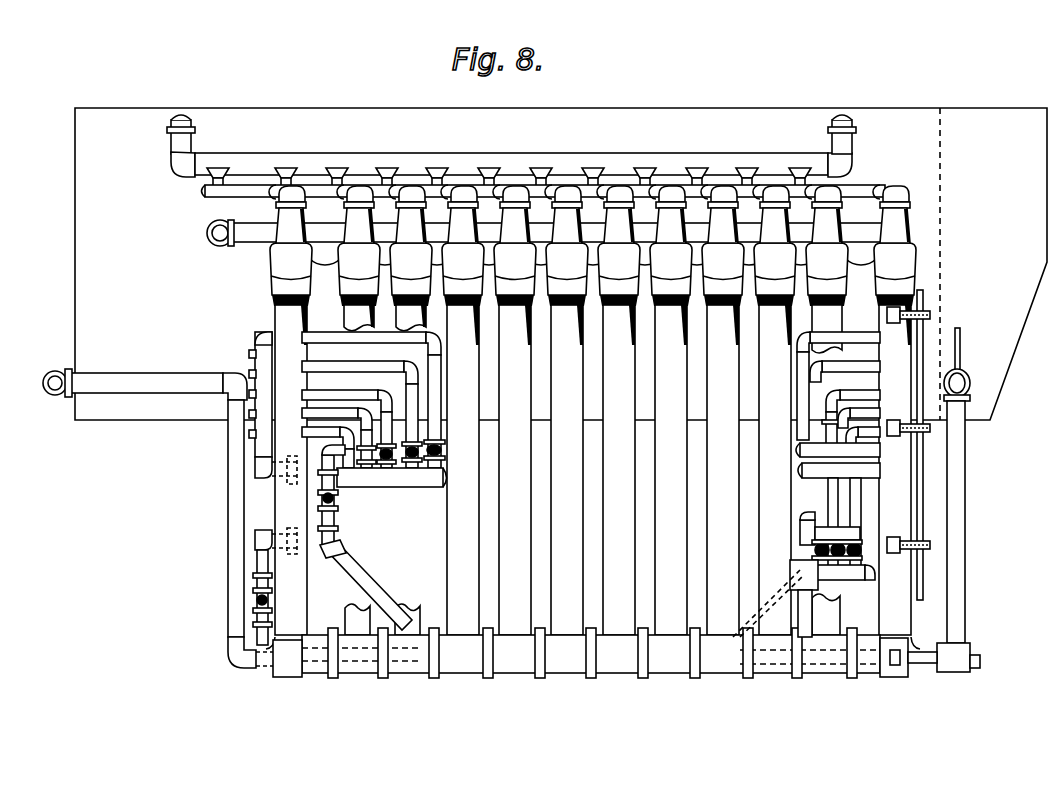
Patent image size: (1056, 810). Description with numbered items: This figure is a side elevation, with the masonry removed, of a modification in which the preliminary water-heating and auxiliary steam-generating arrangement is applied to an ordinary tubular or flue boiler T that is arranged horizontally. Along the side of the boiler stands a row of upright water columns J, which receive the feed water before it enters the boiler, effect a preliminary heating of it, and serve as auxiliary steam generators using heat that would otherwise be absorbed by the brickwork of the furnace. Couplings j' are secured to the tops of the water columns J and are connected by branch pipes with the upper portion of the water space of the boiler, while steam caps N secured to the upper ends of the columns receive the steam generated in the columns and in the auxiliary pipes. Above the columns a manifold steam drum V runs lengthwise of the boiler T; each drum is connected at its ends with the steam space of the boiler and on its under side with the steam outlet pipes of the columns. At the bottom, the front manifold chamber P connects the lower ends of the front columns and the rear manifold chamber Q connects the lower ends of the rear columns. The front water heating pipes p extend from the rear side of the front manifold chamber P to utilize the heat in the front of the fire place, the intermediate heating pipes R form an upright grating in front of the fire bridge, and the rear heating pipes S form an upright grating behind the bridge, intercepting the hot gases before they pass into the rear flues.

The tubular or flue boiler T is at (561, 264).
The manifold steam drum V is at (673, 164).
The steam cap N is at (436, 243).
The coupling j' is at (593, 274).
The water column J is at (598, 484).
The rear heating pipe S is at (257, 358).
The intermediate heating pipe R is at (337, 516).
The front water heating pipe p is at (806, 484).
The rear manifold chamber Q is at (290, 680).
The front manifold chamber P is at (897, 678).